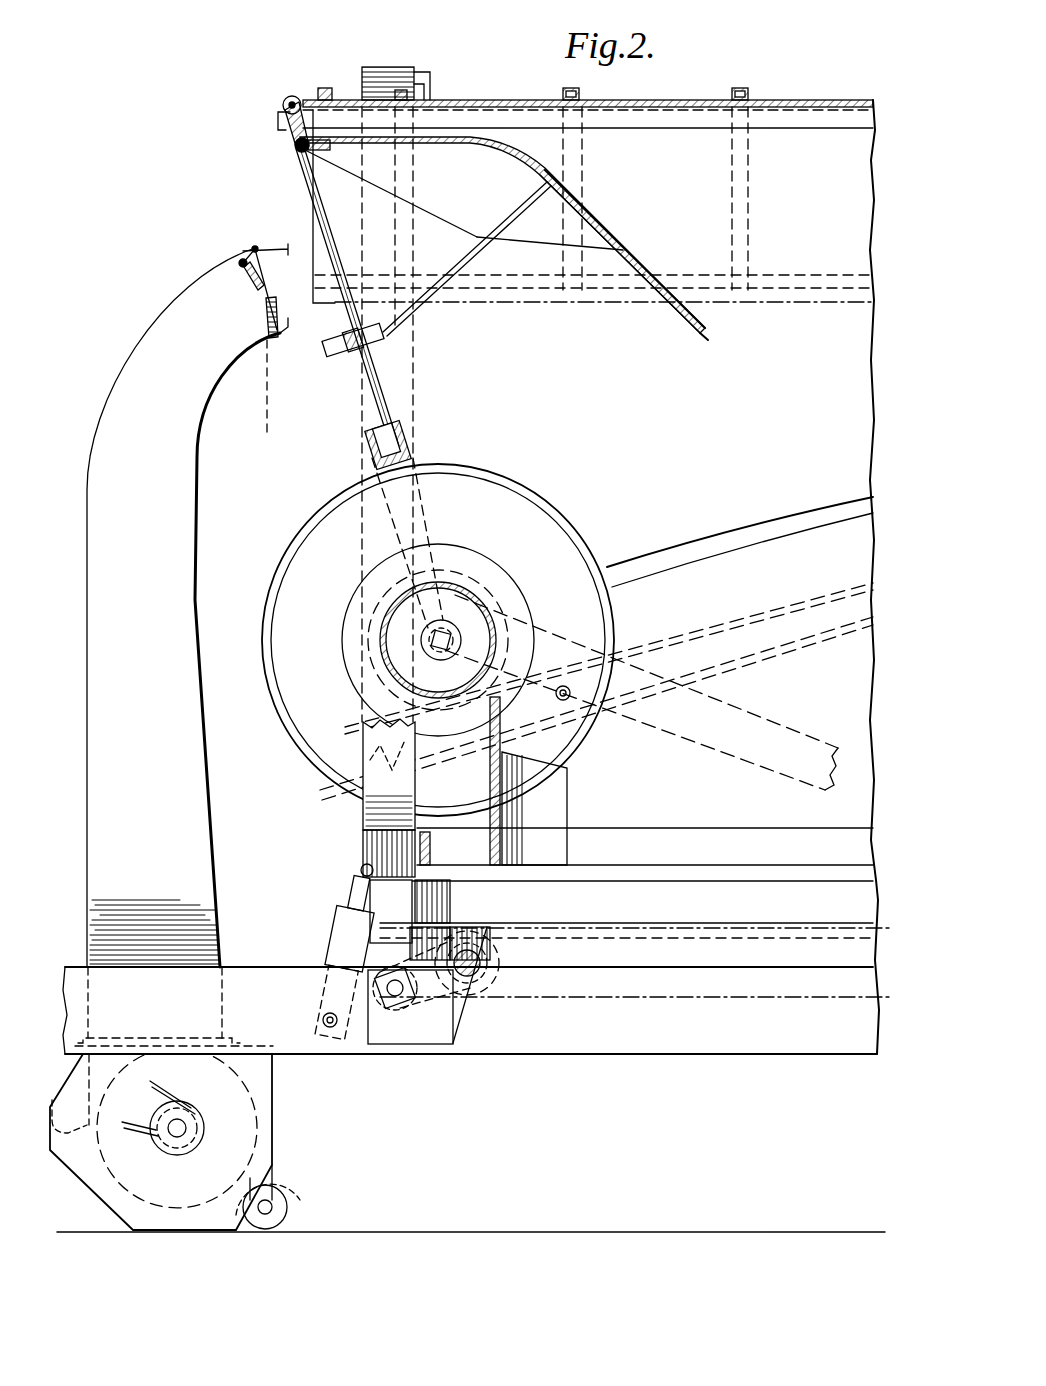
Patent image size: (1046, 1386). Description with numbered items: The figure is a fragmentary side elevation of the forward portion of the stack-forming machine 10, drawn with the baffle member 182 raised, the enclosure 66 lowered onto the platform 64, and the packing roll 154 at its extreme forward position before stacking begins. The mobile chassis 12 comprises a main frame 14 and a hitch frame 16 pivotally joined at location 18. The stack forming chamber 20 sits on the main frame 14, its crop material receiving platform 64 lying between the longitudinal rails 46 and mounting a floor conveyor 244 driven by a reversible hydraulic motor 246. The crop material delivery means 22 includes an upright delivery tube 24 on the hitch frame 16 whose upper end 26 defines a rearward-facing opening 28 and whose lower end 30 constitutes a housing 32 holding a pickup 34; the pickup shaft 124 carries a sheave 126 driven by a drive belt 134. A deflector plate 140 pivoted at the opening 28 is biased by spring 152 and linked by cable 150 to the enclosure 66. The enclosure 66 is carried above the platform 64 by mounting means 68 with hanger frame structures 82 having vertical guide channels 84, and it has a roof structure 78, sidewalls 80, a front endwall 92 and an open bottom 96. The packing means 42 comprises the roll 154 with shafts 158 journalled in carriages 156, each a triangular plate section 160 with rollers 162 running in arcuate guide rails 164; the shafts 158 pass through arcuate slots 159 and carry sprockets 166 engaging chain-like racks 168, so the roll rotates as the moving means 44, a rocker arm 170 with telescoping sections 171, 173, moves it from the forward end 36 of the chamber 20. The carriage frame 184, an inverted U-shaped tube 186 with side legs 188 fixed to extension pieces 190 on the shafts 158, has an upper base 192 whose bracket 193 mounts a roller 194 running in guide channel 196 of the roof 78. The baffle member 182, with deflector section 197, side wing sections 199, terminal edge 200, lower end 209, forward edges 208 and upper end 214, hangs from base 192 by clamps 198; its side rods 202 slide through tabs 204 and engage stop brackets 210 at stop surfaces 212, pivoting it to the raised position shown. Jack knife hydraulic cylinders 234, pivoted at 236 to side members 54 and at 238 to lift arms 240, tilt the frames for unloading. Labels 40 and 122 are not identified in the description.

The machine 10 is at (352, 50).
The mobile chassis 12 is at (605, 1057).
The main frame 14 is at (548, 1057).
The hitch frame 16 is at (380, 1057).
The pivotal mounting location 18 is at (490, 962).
The stack forming chamber 20 is at (850, 392).
The crop material delivery means 22 is at (85, 598).
The upright delivery tube 24 is at (87, 505).
The upper end 26 is at (222, 262).
The opening 28 is at (289, 325).
The lower end 30 is at (275, 1108).
The housing 32 is at (92, 1190).
The pickup 34 is at (190, 1232).
The forward end of the enclosure 36 is at (370, 463).
The strut assembly 40 is at (622, 232).
The packing means 42 is at (594, 528).
The moving means 44 is at (725, 695).
The longitudinal rails 46 is at (675, 1054).
The side members 54 is at (302, 1057).
The crop material receiving platform 64 is at (632, 930).
The enclosure 66 is at (492, 100).
The mounting means 68 is at (358, 828).
The hood or roof structure 78 is at (672, 100).
The sidewalls 80 is at (850, 647).
The hanger frame structures 82 is at (395, 68).
The vertical guide channels 84 is at (415, 374).
The front endwall 92 is at (490, 768).
The open bottom 96 is at (620, 868).
The caster wheel 122 is at (285, 1205).
The shaft 124 is at (186, 1128).
The sheave 126 is at (182, 1152).
The drive belt 134 is at (160, 1085).
The deflector plate 140 is at (257, 246).
The cable 150 is at (262, 388).
The spring 152 is at (242, 280).
The packing drum or roll 154 is at (515, 482).
The carriages 156 is at (548, 662).
The roll shafts 158 is at (444, 635).
The arcuate slot 159 is at (712, 508).
The triangular plate section 160 is at (380, 693).
The roller 162 is at (330, 785).
The guide rails 164 is at (762, 612).
The sprocket 166 is at (490, 580).
The chain-like track or rack 168 is at (668, 632).
The driving rocker arms 170 is at (668, 750).
The lower section 171 is at (812, 737).
The upper section 173 is at (768, 730).
The baffle member 182 is at (645, 260).
The carriage frame 184 is at (400, 402).
The inverted U-shaped tube 186 is at (300, 180).
The side legs 188 is at (358, 372).
The flat extension piece 190 is at (430, 520).
The upper base 192 is at (295, 148).
The bracket 193 is at (280, 135).
The roller 194 is at (290, 97).
The guide channel 196 is at (635, 130).
The deflector section 197 is at (590, 220).
The clamps 198 is at (332, 150).
The side wing sections 199 is at (512, 238).
The terminal edge 200 is at (712, 333).
The side rods 202 is at (448, 270).
The tabs 204 is at (388, 345).
The forward edges 208 is at (445, 230).
The lower end 209 is at (685, 320).
The stop brackets 210 is at (338, 352).
The stop surface 212 is at (340, 338).
The upper end 214 is at (430, 144).
The jack knife hydraulic cylinders 234 is at (340, 925).
The cylinder end pivot 236 is at (322, 1020).
The piston end pivot 238 is at (360, 870).
The lift arms 240 is at (455, 896).
The floor conveyor 244 is at (760, 930).
The reversible hydraulic motor 246 is at (385, 1020).